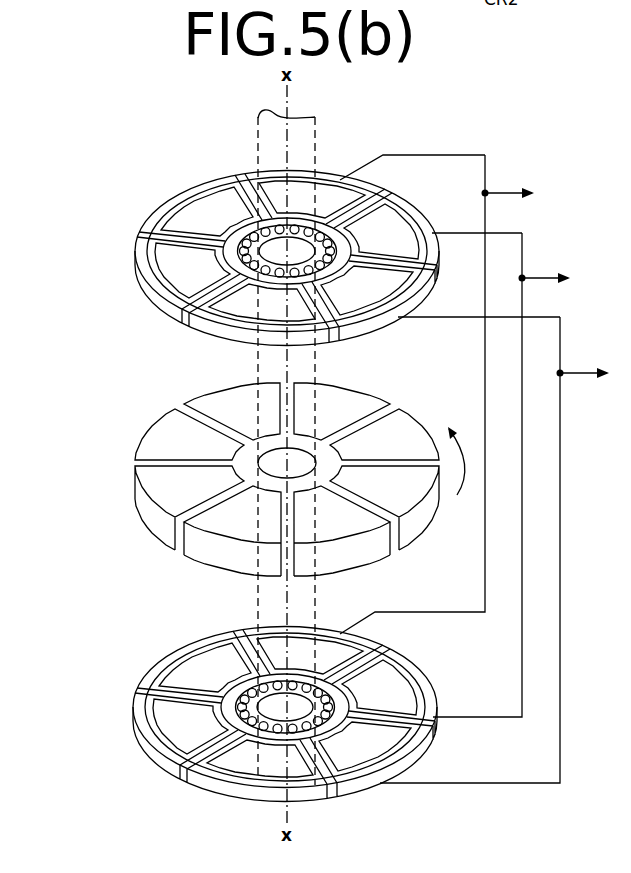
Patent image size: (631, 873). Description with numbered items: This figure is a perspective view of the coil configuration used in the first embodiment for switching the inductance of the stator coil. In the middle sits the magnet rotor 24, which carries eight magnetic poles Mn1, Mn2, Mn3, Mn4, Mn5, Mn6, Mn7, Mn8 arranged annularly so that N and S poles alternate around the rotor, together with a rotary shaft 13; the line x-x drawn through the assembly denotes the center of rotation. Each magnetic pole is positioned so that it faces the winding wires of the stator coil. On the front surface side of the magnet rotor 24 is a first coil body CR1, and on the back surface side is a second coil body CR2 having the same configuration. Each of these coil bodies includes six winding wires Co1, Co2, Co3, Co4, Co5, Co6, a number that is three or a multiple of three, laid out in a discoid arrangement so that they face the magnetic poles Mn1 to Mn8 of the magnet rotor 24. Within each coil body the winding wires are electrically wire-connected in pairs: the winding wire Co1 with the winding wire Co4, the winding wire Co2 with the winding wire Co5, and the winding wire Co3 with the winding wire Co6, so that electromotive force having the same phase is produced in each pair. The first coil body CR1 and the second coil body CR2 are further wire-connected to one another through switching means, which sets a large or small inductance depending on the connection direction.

The rotary shaft 13 is at (273, 150).
The magnet rotor 24 is at (243, 473).
The first coil body CR1 is at (150, 218).
The second coil body CR2 is at (142, 680).
The winding wire Co1 is at (328, 166).
The winding wire Co2 is at (403, 197).
The winding wire Co3 is at (385, 323).
The winding wire Co4 is at (202, 323).
The winding wire Co5 is at (152, 285).
The winding wire Co6 is at (222, 190).
The magnetic pole Mn1 is at (348, 399).
The magnetic pole Mn2 is at (394, 423).
The magnetic pole Mn3 is at (394, 519).
The magnetic pole Mn4 is at (348, 545).
The magnetic pole Mn5 is at (209, 541).
The magnetic pole Mn6 is at (146, 508).
The magnetic pole Mn7 is at (176, 418).
The magnetic pole Mn8 is at (227, 391).